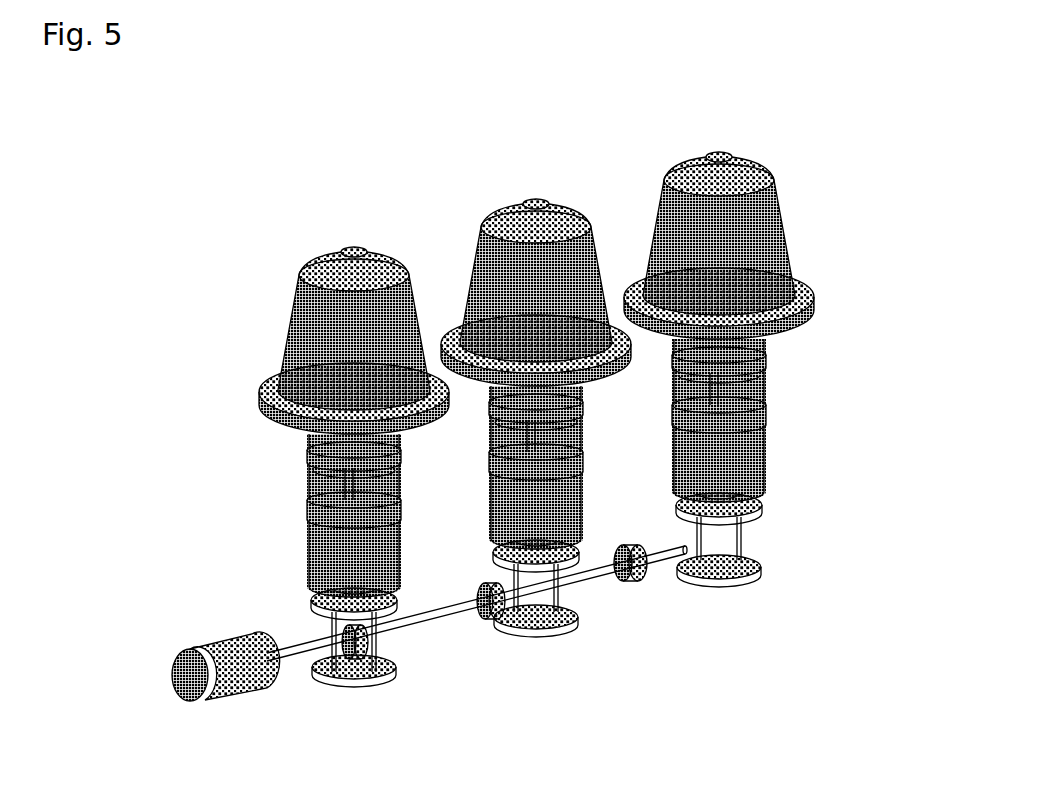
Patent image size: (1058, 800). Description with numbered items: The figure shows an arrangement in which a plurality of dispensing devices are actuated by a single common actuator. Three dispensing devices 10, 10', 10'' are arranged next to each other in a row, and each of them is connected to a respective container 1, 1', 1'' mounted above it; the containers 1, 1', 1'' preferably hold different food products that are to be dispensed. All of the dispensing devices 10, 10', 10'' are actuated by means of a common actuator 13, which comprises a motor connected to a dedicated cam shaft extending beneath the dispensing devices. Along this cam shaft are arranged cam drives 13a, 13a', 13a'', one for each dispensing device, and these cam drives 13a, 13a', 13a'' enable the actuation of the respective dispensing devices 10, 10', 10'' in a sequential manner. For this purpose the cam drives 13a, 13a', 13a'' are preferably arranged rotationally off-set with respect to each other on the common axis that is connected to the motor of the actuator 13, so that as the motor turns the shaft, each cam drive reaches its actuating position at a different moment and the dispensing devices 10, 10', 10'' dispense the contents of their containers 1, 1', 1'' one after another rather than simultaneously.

The container 1 is at (275, 324).
The container 1' is at (473, 265).
The container 1'' is at (796, 233).
The dispensing device 10 is at (283, 525).
The dispensing device 10' is at (541, 476).
The dispensing device 10'' is at (792, 427).
The common actuator 13 is at (248, 657).
The cam drive 13a is at (428, 658).
The cam drive 13a' is at (572, 610).
The cam drive 13a'' is at (715, 572).